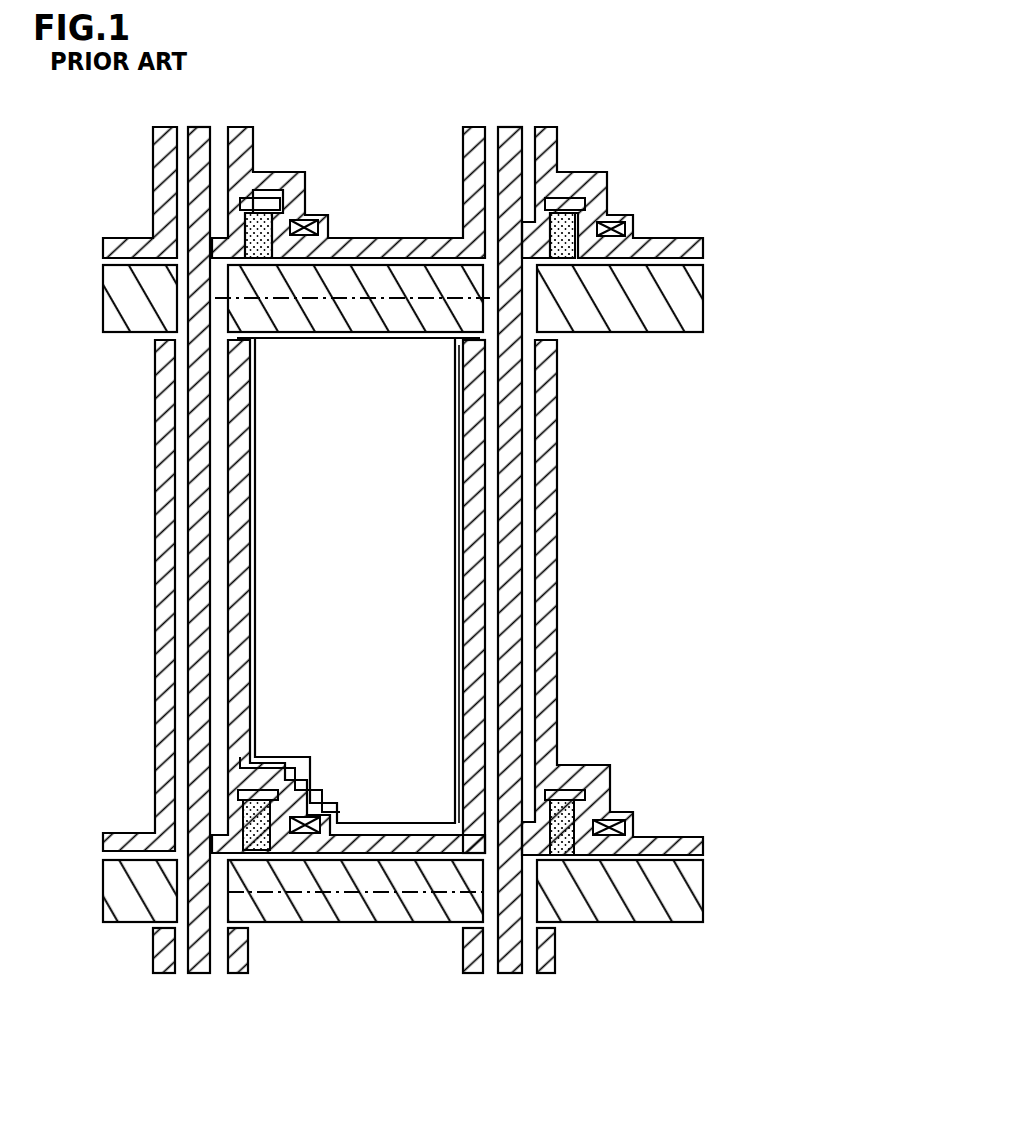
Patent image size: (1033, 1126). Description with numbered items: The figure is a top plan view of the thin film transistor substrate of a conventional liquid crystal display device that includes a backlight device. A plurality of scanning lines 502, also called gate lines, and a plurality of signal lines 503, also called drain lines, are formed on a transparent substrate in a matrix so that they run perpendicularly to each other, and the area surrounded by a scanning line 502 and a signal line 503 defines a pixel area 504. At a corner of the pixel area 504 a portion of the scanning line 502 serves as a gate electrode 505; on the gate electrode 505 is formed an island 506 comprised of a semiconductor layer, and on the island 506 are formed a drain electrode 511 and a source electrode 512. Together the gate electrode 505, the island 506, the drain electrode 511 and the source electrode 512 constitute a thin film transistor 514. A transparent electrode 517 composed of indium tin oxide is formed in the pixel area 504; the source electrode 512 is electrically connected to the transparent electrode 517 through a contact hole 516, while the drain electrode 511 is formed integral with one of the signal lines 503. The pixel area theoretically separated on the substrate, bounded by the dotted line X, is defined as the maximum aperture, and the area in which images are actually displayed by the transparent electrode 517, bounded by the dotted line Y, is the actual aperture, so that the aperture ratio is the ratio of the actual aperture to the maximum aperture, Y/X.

The scanning line 502 is at (703, 314).
The signal line 503 is at (200, 975).
The pixel area 504 is at (318, 452).
The gate electrode 505 is at (273, 763).
The island 506 is at (250, 856).
The drain electrode 511 is at (227, 832).
The source electrode 512 is at (265, 830).
The thin film transistor 514 is at (297, 870).
The contact hole 516 is at (328, 816).
The transparent electrode 517 is at (473, 610).
The dotted line defining the maximum aperture X is at (357, 297).
The dotted line defining the actual aperture Y is at (453, 535).